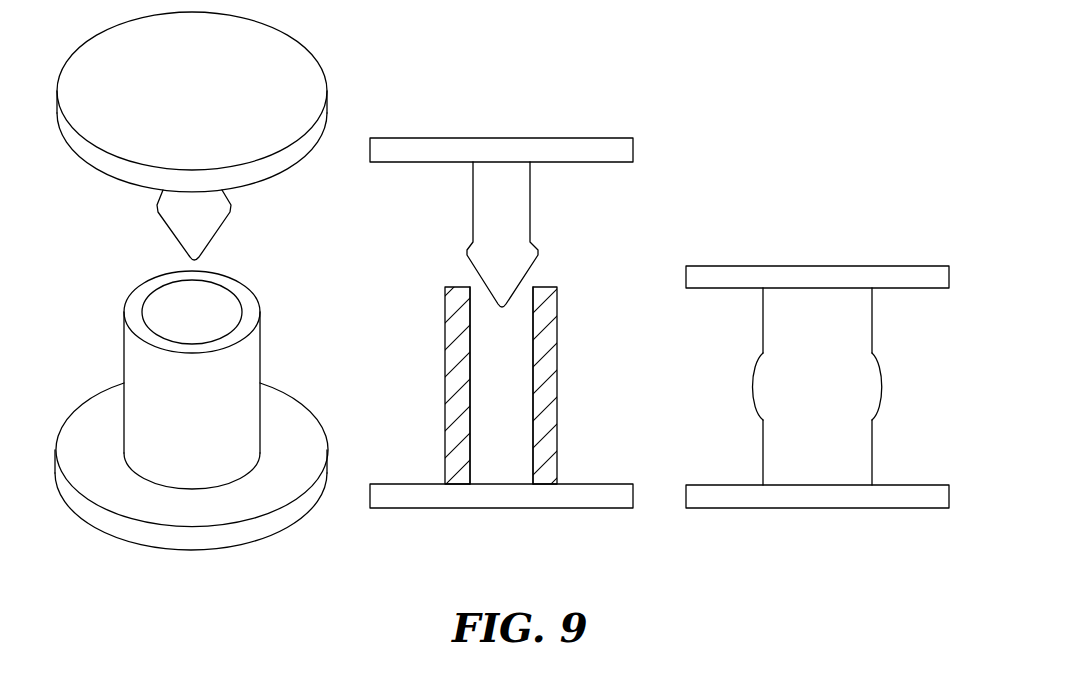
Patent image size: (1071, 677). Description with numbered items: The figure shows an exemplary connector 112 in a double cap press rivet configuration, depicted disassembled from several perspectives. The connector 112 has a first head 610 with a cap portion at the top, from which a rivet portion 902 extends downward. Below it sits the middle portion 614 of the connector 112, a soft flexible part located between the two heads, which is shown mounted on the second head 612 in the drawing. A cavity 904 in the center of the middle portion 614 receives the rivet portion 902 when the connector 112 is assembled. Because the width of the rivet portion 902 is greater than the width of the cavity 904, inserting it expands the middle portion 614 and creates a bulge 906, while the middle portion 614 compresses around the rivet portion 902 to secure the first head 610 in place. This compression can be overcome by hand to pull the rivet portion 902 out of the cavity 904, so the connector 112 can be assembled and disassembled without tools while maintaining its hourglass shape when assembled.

The connector 112 is at (784, 44).
The first head 610 is at (277, 87).
The lower plate 612 is at (258, 527).
The middle portion 614 is at (135, 367).
The rivet portion 902 is at (210, 218).
The cavity 904 is at (193, 308).
The bulge 906 is at (889, 382).